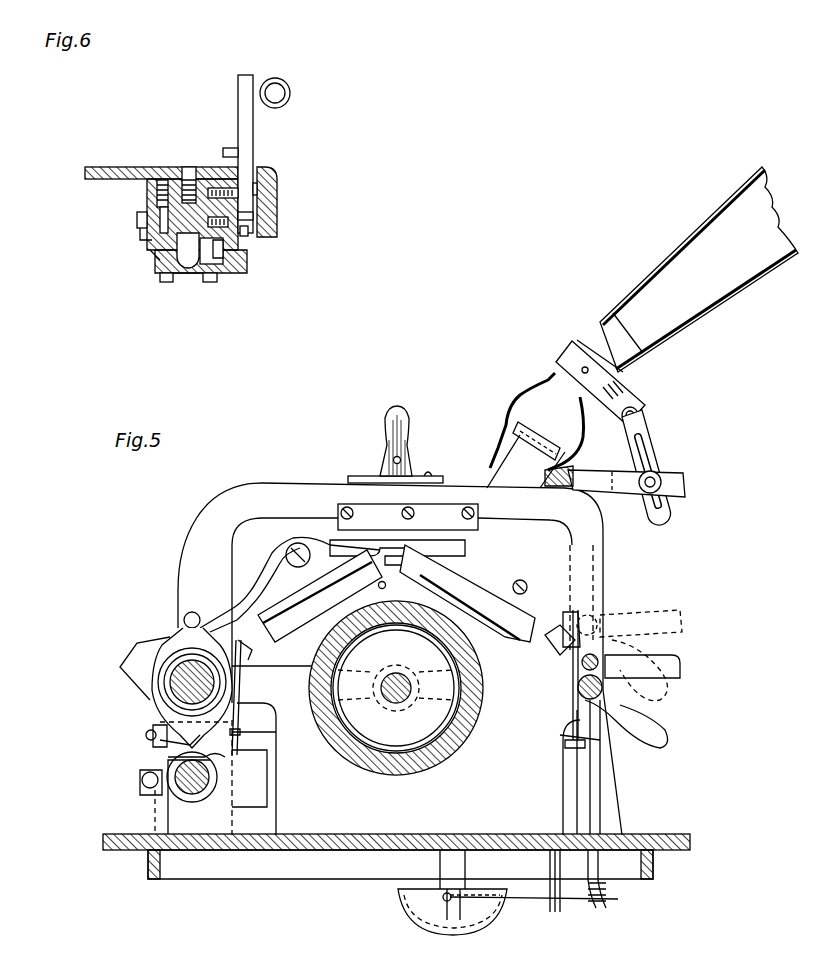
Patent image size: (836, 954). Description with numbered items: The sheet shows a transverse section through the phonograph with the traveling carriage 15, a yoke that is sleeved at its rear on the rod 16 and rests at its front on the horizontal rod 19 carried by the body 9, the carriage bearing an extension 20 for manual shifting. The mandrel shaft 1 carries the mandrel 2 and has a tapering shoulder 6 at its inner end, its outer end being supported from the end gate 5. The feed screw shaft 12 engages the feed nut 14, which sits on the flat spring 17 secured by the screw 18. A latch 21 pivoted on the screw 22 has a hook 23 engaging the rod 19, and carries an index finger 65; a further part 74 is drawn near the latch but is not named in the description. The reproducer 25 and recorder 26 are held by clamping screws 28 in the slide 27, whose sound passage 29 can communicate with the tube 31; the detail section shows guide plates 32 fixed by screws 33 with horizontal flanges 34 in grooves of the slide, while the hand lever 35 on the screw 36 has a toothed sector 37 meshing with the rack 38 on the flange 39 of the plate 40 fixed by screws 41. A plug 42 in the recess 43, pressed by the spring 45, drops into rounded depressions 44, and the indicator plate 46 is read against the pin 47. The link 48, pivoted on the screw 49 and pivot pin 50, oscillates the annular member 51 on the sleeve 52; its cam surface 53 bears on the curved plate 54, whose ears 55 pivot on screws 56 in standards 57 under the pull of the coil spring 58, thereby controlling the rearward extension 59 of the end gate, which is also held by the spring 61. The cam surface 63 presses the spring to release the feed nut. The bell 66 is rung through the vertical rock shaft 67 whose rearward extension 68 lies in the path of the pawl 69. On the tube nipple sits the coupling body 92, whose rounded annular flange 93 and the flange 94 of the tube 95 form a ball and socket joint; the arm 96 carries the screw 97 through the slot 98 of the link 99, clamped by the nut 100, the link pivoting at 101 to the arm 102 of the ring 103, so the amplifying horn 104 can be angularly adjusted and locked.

In FIG. 5, the mandrel shaft 1 is at (388, 706).
In FIG. 5, the mandrel 2 is at (445, 718).
In FIG. 5, the end gate 5 is at (406, 750).
In FIG. 5, the tapering shoulder 6 is at (396, 406).
In FIG. 5, the body or bed plate 9 is at (497, 834).
In FIG. 5, the feed screw shaft 12 is at (192, 795).
In FIG. 5, the feed nut 14 is at (225, 787).
In FIG. 6, the traveling carriage 15 is at (206, 168).
In FIG. 5, the traveling carriage 15 is at (262, 490).
In FIG. 5, the rod 16 is at (172, 695).
In FIG. 5, the flat spring 17 is at (261, 731).
In FIG. 5, the screw 18 is at (257, 652).
In FIG. 5, the horizontal rod 19 is at (573, 705).
In FIG. 5, the extension 20 is at (680, 668).
In FIG. 5, the latch 21 is at (640, 718).
In FIG. 5, the screw 22 is at (625, 652).
In FIG. 5, the hook 23 is at (568, 735).
In FIG. 5, the reproducer 25 is at (258, 618).
In FIG. 5, the recorder 26 is at (505, 640).
In FIG. 6, the slide 27 is at (233, 268).
In FIG. 5, the slide 27 is at (322, 540).
In FIG. 5, the clamping screws 28 is at (527, 588).
In FIG. 6, the sound passage 29 is at (160, 262).
In FIG. 5, the tube 31 is at (526, 469).
In FIG. 6, the guide plates 32 is at (150, 240).
In FIG. 5, the guide plates 32 is at (398, 510).
In FIG. 6, the screws 33 is at (137, 215).
In FIG. 5, the screws 33 is at (349, 508).
In FIG. 6, the horizontal flanges 34 is at (150, 250).
In FIG. 6, the hand lever 35 is at (253, 145).
In FIG. 5, the hand lever 35 is at (410, 455).
In FIG. 6, the screw 36 is at (277, 183).
In FIG. 6, the toothed sector 37 is at (257, 218).
In FIG. 6, the rack 38 is at (248, 232).
In FIG. 6, the flange 39 is at (247, 265).
In FIG. 6, the plate 40 is at (190, 282).
In FIG. 6, the screws 41 is at (166, 282).
In FIG. 6, the plug 42 is at (160, 215).
In FIG. 6, the recess 43 is at (160, 180).
In FIG. 6, the rounded depressions 44 is at (140, 232).
In FIG. 6, the spring 45 is at (176, 170).
In FIG. 5, the indicator plate 46 is at (429, 475).
In FIG. 6, the pin 47 is at (232, 148).
In FIG. 5, the pin 47 is at (393, 460).
In FIG. 5, the link 48 is at (260, 585).
In FIG. 5, the screw 49 is at (286, 550).
In FIG. 5, the pivot pin 50 is at (184, 618).
In FIG. 5, the annular member 51 is at (163, 677).
In FIG. 5, the sleeve 52 is at (157, 690).
In FIG. 5, the cam surface 53 is at (190, 745).
In FIG. 5, the curved plate 54 is at (170, 758).
In FIG. 5, the ears 55 is at (145, 786).
In FIG. 5, the screws 56 is at (150, 795).
In FIG. 5, the standards 57 is at (138, 848).
In FIG. 5, the coil spring 58 is at (150, 820).
In FIG. 5, the rearward extension 59 is at (153, 728).
In FIG. 5, the spring 61 is at (146, 737).
In FIG. 5, the cam surface 63 is at (239, 700).
In FIG. 5, the index finger 65 is at (582, 668).
In FIG. 5, the bell 66 is at (425, 925).
In FIG. 5, the vertical rock shaft 67 is at (600, 808).
In FIG. 5, the rearward extension 68 is at (568, 745).
In FIG. 5, the pawl 69 is at (578, 690).
In FIG. 5, the hinge 74 is at (575, 648).
In FIG. 5, the body 92 is at (510, 428).
In FIG. 5, the rounded annular flange 93 is at (512, 420).
In FIG. 5, the flange 94 is at (517, 398).
In FIG. 5, the tube 95 is at (628, 378).
In FIG. 5, the arm 96 is at (622, 492).
In FIG. 5, the screw 97 is at (662, 474).
In FIG. 5, the slot 98 is at (660, 450).
In FIG. 5, the link 99 is at (668, 514).
In FIG. 5, the nut 100 is at (686, 484).
In FIG. 5, the pivot 101 is at (640, 412).
In FIG. 5, the arm 102 is at (612, 418).
In FIG. 5, the ring 103 is at (580, 342).
In FIG. 5, the amplifying horn 104 is at (722, 306).